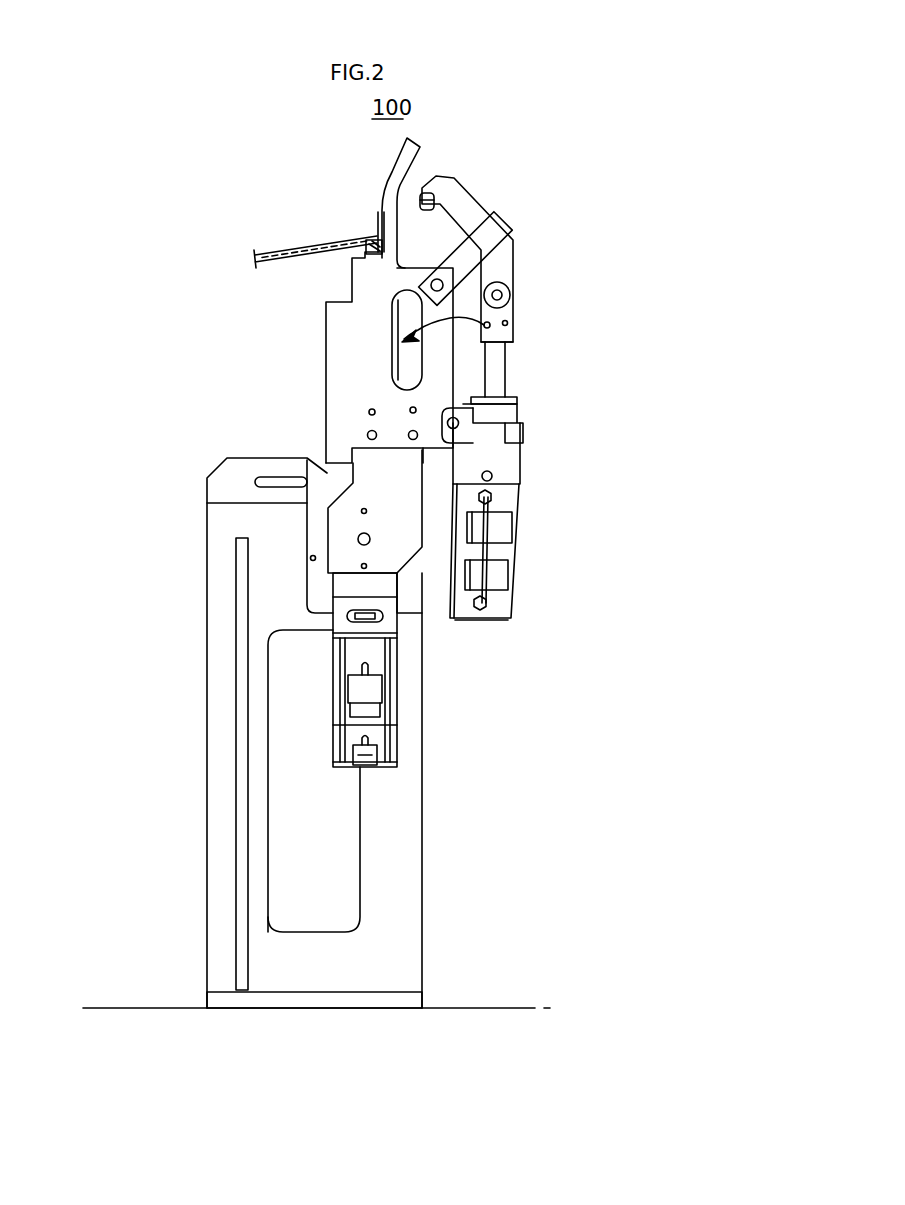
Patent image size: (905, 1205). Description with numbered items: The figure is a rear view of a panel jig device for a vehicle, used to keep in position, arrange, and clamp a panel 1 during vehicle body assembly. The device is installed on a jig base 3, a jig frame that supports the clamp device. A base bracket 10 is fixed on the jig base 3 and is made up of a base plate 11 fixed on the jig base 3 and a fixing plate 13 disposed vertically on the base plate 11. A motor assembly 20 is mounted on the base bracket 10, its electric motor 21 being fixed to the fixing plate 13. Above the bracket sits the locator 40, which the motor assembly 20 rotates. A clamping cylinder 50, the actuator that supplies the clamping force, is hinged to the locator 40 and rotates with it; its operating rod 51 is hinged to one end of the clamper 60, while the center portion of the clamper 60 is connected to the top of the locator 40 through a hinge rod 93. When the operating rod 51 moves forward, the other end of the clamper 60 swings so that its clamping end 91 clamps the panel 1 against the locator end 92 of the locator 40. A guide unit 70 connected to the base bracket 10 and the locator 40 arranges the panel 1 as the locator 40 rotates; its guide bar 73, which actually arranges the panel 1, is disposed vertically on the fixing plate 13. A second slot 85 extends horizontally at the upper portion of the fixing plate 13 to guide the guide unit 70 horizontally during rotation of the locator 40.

The panel 1 is at (302, 251).
The jig base 3 is at (503, 1008).
The base bracket 10 is at (371, 731).
The base plate 11 is at (322, 1008).
The fixing plate 13 is at (410, 794).
The motor assembly 20 is at (272, 670).
The electric motor 21 is at (332, 665).
The locator 40 is at (340, 386).
The clamping cylinder 50 is at (524, 454).
The operating rod 51 is at (500, 373).
The clamper 60 is at (475, 230).
The guide unit 70 is at (506, 328).
The guide bar 73 is at (390, 200).
The second slot 85 is at (275, 478).
The clamping end 91 is at (424, 204).
The locator end 92 is at (368, 245).
The hinge rod 93 is at (503, 233).